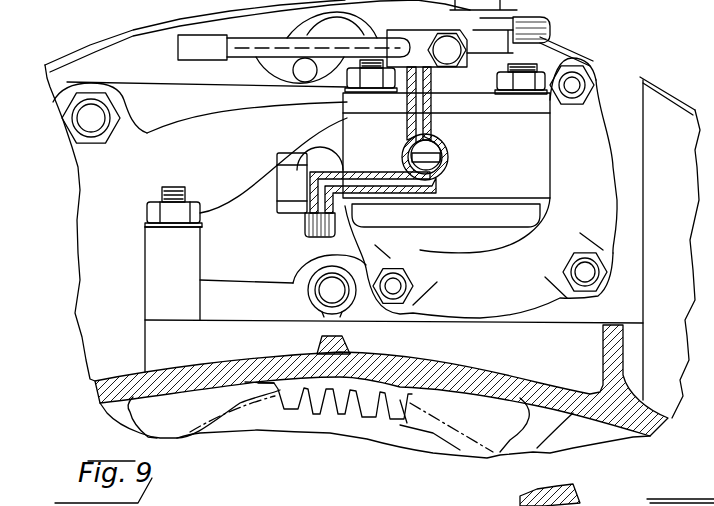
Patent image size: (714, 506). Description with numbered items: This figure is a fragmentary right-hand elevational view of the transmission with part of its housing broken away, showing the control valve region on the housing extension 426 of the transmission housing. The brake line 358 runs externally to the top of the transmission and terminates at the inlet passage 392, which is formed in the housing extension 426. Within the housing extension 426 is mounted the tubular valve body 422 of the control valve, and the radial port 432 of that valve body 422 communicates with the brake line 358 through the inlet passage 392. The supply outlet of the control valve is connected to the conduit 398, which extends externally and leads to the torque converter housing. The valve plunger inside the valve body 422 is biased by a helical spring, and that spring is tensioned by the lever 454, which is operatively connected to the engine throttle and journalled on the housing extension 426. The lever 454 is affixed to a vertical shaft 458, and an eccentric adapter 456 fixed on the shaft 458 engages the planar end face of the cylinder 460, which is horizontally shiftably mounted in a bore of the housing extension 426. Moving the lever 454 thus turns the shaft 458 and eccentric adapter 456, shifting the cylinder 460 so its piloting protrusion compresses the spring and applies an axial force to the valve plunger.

The brake line 358 is at (308, 226).
The inlet passage 392 is at (403, 198).
The conduit 398 is at (540, 20).
The tubular valve body 422 is at (404, 159).
The housing extension 426 is at (549, 189).
The radial port 432 is at (437, 182).
The lever 454 is at (265, 38).
The eccentric adapter 456 is at (431, 147).
The vertical shaft 458 is at (428, 98).
The cylinder 460 is at (440, 145).